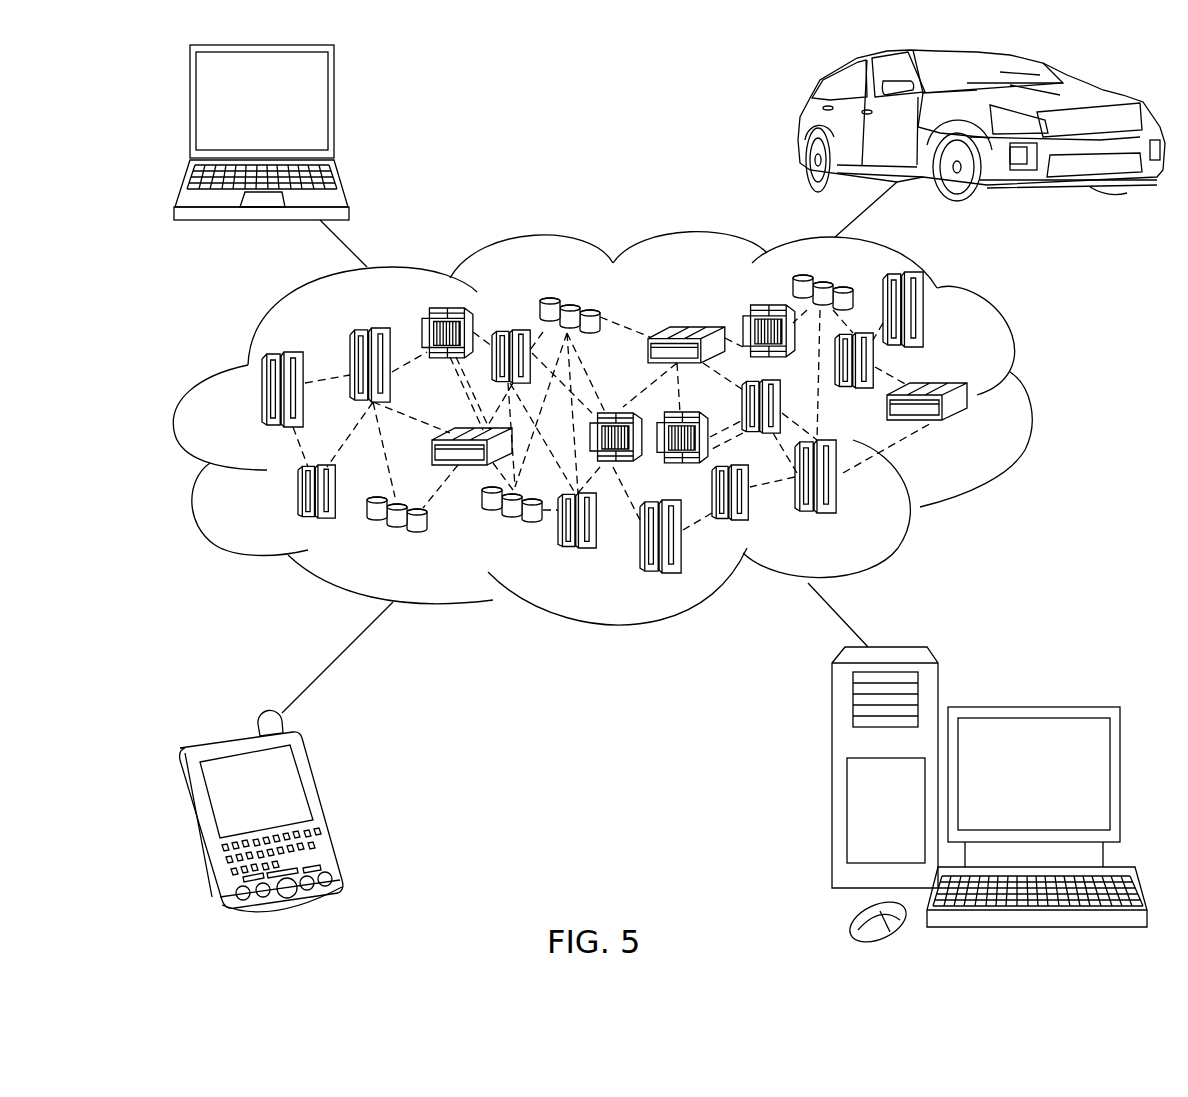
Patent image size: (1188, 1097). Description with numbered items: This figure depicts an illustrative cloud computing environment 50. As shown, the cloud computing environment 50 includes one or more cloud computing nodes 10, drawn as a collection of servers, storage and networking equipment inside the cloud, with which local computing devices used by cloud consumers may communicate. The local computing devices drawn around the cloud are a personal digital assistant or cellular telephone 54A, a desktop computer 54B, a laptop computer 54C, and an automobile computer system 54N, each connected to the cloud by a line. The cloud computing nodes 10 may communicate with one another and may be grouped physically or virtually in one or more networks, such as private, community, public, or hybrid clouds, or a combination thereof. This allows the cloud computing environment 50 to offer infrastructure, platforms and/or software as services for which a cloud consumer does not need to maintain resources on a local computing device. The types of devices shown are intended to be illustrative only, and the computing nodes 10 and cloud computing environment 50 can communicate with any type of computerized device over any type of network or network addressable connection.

The cloud computing node 10 is at (968, 432).
The cloud computing environment 50 is at (1033, 401).
The personal digital assistant or cellular telephone 54A is at (323, 805).
The desktop computer 54B is at (1035, 707).
The laptop computer 54C is at (335, 108).
The automobile computer system 54N is at (797, 126).